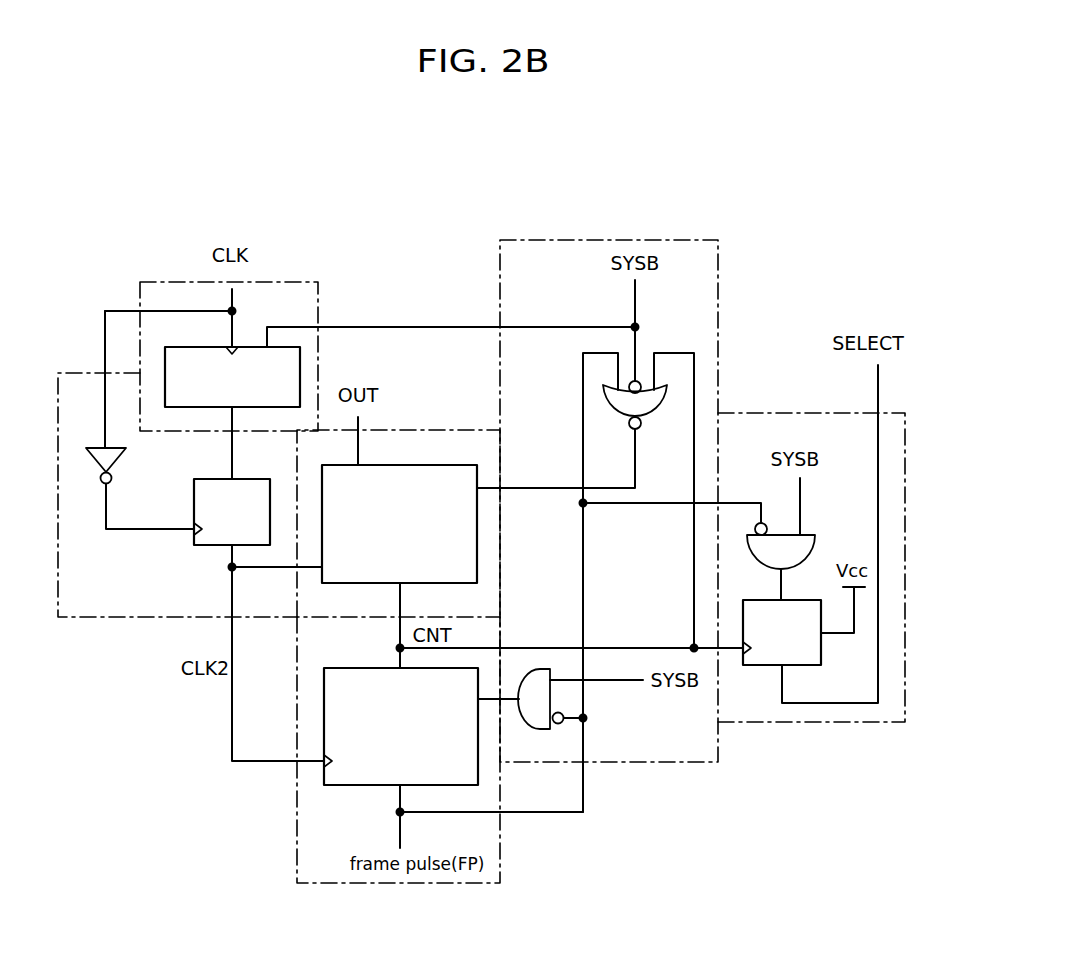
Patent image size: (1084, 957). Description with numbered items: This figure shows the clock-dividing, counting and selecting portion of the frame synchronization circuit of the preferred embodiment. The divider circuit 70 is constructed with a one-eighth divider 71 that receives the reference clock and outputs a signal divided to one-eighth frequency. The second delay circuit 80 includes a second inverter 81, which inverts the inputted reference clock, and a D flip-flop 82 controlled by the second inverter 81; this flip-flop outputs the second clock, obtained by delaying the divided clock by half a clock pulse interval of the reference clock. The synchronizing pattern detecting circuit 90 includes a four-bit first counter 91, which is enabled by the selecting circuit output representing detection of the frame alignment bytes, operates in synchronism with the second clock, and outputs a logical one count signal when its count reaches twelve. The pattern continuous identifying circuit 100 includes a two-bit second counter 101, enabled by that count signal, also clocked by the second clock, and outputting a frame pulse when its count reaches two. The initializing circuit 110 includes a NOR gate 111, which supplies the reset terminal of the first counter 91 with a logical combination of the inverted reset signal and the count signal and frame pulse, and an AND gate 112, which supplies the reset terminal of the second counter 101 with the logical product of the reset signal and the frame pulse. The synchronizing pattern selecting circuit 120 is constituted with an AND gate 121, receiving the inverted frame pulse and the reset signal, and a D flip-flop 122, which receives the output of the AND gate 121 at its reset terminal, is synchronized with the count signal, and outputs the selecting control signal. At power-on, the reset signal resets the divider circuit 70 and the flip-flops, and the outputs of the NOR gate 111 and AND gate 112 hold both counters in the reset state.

The divider circuit 70 is at (270, 283).
The ⅛ divider 71 is at (300, 372).
The second delay circuit 80 is at (190, 619).
The second inverter 81 is at (212, 546).
The D flip-flop (18-th flip-flop) 82 is at (118, 458).
The synchronizing pattern detecting circuit 90 is at (398, 430).
The 4-bit counter (first counter) 91 is at (420, 465).
The pattern continuous identifying circuit 100 is at (297, 860).
The 2-bit counter (second counter) 101 is at (338, 668).
The initializing circuit 110 is at (718, 270).
The NOR gate 111 is at (655, 412).
The AND gate (third AND gate) 112 is at (530, 669).
The synchronizing pattern selecting circuit 120 is at (757, 413).
The AND gate (fourth AND gate) 121 is at (815, 538).
The D flip-flop (19-th flip-flop) 122 is at (770, 667).